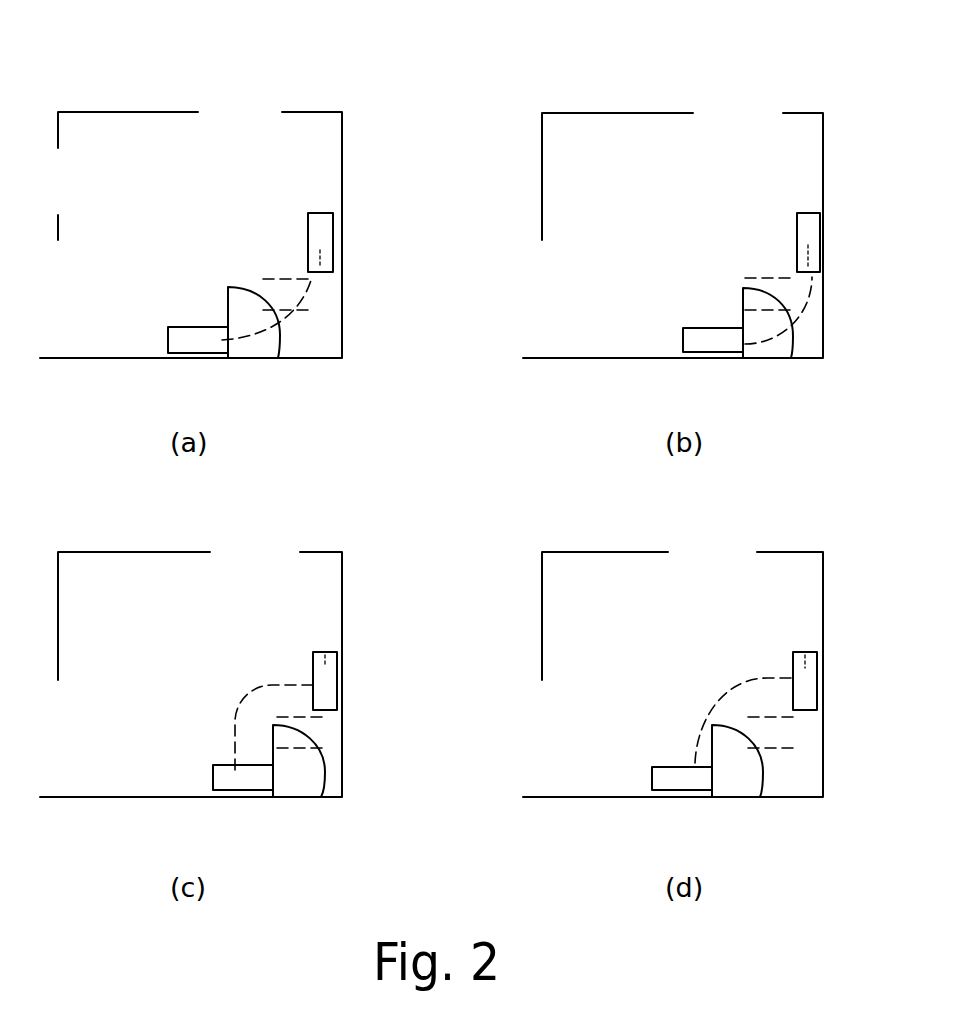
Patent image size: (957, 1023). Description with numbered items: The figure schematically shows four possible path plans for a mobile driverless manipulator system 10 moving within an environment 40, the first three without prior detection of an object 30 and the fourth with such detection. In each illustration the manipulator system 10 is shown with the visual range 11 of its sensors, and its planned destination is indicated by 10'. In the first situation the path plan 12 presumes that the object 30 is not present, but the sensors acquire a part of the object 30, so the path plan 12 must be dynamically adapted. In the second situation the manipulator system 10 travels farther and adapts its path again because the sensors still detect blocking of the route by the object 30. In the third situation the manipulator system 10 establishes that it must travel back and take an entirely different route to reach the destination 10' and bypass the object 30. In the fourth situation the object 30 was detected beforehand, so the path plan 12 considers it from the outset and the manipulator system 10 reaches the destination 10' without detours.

The environment 40 is at (168, 98).
The mobile driverless manipulator system 10 is at (405, 541).
The destination of the manipulator system 10' is at (598, 414).
The visual range of the sensors 11 is at (240, 297).
The path plan 12 is at (310, 276).
The object 30 is at (300, 313).